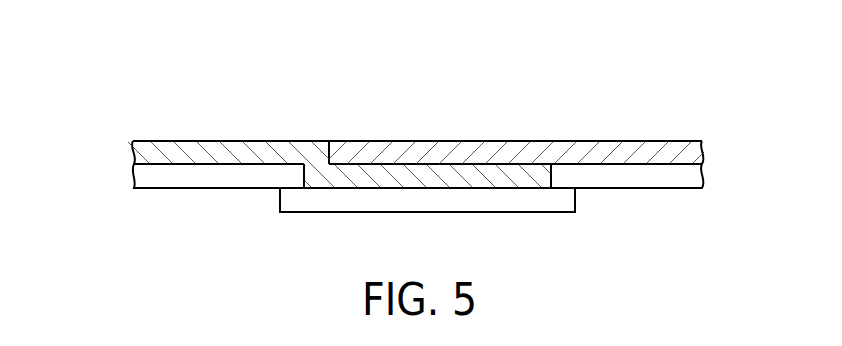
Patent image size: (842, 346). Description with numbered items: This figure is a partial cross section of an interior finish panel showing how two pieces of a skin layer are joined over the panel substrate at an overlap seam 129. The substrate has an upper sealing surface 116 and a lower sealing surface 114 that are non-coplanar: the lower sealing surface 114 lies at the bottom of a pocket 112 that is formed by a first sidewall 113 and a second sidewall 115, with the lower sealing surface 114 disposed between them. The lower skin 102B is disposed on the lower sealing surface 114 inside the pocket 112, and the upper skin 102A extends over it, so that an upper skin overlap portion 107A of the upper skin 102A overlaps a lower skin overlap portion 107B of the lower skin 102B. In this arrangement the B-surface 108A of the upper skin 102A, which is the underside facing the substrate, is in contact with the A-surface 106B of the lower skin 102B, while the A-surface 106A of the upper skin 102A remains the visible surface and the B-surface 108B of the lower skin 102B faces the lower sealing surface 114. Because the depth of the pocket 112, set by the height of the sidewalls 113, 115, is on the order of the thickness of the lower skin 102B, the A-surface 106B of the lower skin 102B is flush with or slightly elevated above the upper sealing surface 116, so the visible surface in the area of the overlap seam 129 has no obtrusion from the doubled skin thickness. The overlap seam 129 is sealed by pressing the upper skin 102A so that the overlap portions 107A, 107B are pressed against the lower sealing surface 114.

The upper skin 102A is at (666, 107).
The lower skin 102B is at (152, 107).
The overlap seam 129 is at (384, 107).
The A-surface of the upper skin 106A is at (549, 141).
The A-surface of the lower skin 106B is at (277, 141).
The upper skin overlap portion 107A is at (415, 141).
The lower skin overlap portion 107B is at (385, 212).
The B-surface of the upper skin 108A is at (502, 164).
The B-surface of the lower skin 108B is at (187, 163).
The pocket 112 is at (325, 226).
The first sidewall 113 is at (303, 188).
The lower sealing surface 114 is at (440, 187).
The second sidewall 115 is at (552, 188).
The upper sealing surface 116 is at (152, 164).